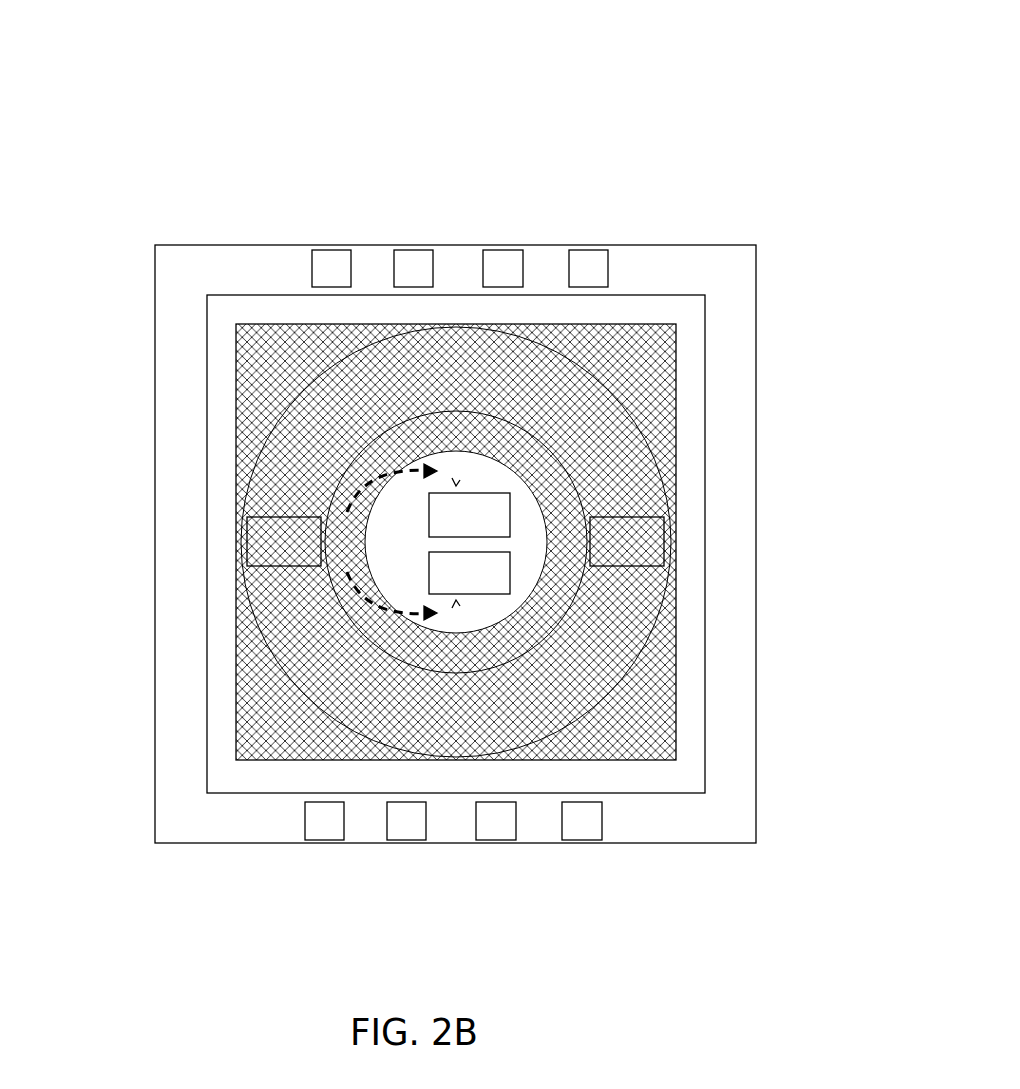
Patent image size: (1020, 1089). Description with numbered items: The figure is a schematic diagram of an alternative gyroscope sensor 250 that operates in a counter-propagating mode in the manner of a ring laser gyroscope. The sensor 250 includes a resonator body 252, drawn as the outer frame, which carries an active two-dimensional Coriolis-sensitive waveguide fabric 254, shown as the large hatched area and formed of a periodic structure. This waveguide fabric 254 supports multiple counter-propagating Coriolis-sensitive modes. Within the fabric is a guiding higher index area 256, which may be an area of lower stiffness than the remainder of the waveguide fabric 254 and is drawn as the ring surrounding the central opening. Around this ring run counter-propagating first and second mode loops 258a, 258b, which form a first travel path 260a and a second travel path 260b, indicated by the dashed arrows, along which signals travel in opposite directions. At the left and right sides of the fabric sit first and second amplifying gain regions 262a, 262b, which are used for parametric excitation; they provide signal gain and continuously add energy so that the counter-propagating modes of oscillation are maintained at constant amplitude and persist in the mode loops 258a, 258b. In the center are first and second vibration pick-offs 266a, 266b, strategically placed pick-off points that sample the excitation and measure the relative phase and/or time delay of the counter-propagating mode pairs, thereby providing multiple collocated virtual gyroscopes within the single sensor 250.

The sensor 250 is at (462, 494).
The resonator body 252 is at (277, 245).
The waveguide fabric 254 is at (448, 629).
The guiding higher index area 256 is at (337, 507).
The first mode loop 258a is at (456, 485).
The second mode loop 258b is at (455, 603).
The first travel path 260a is at (393, 470).
The second travel path 260b is at (393, 614).
The first amplifying gain region 262a is at (268, 541).
The second amplifying gain region 262b is at (645, 541).
The first vibration pick-off 266a is at (472, 512).
The second vibration pick-off 266b is at (472, 575).